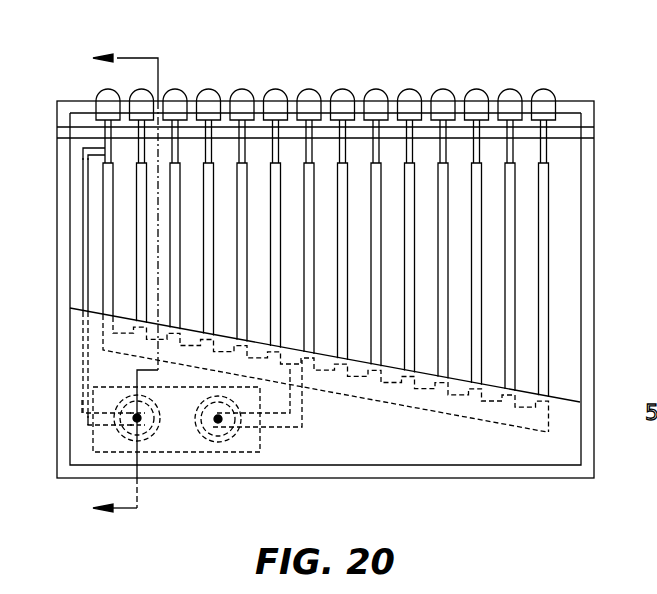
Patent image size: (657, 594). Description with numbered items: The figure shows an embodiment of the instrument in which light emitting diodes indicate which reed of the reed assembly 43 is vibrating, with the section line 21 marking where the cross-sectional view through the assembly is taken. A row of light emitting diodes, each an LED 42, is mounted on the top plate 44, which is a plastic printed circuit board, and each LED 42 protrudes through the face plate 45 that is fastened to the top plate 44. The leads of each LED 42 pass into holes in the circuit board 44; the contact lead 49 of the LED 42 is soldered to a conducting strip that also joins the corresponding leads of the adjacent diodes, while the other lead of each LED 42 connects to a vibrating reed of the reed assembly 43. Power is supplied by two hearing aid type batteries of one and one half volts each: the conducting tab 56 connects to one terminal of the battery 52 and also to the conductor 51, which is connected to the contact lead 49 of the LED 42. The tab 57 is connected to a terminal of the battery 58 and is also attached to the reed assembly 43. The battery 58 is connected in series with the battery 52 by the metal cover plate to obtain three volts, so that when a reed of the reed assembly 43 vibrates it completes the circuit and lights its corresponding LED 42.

The section line 21- 21 is at (113, 285).
The light emitting diode 42 is at (94, 91).
The reed assembly 43 is at (395, 403).
The top plate 44 is at (595, 130).
The face plate 45 is at (577, 100).
The lead 49 is at (83, 162).
The conductor 51 is at (83, 203).
The battery 52 is at (164, 453).
The conducting tab 56 is at (92, 427).
The tab 57 is at (290, 427).
The battery 58 is at (223, 453).